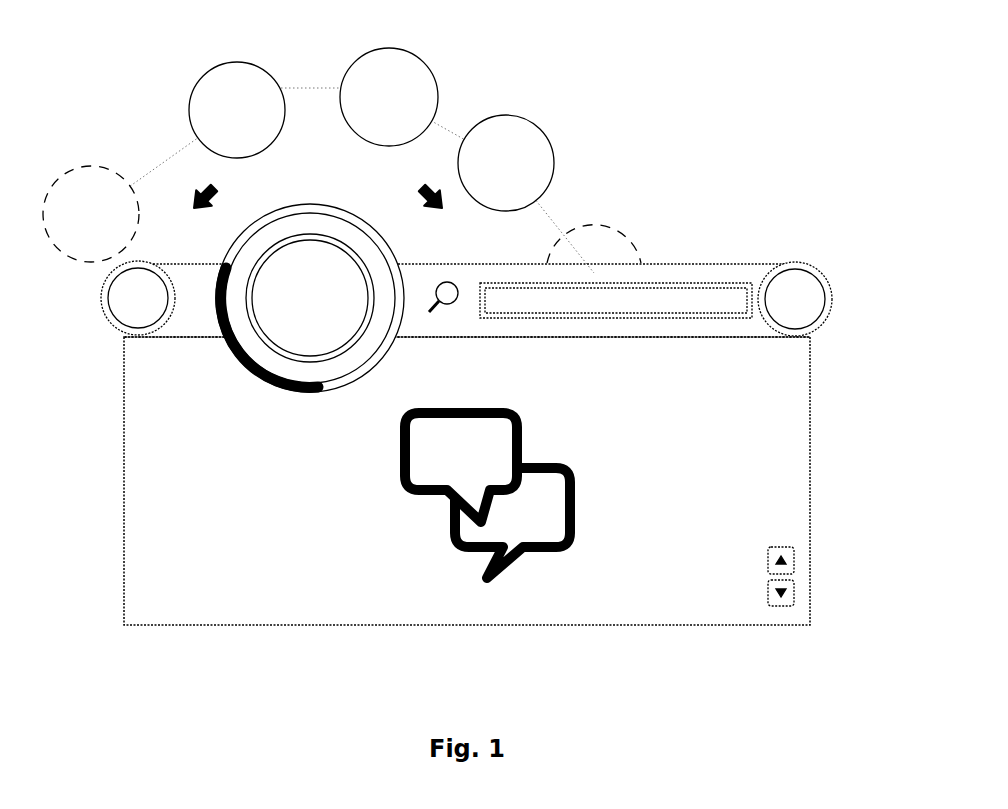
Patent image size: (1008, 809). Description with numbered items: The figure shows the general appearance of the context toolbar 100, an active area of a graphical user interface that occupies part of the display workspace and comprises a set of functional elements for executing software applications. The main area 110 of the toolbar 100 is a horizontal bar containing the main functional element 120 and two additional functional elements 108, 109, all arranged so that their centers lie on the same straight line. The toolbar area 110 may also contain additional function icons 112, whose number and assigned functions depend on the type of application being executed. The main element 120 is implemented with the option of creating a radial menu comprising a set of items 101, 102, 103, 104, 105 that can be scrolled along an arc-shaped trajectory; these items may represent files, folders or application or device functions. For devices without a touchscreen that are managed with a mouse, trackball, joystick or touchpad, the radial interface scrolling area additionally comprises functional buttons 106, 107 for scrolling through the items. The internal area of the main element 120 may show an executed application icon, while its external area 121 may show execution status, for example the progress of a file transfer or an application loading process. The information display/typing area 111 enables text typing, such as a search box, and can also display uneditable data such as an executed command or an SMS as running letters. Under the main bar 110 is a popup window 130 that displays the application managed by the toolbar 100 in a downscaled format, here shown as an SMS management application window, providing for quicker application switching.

The context toolbar 100 is at (797, 42).
The radial menu item 101 is at (93, 167).
The radial menu item 102 is at (223, 63).
The radial menu item 103 is at (398, 49).
The radial menu item 104 is at (527, 118).
The radial menu item 105 is at (636, 250).
The scrolling functional button 106 is at (202, 187).
The scrolling functional button 107 is at (427, 192).
The additional functional element 108 is at (108, 297).
The additional functional element 109 is at (795, 263).
The main area 110 is at (692, 263).
The information display/typing area 111 is at (637, 303).
The additional function icon 112 is at (450, 303).
The main functional element 120 is at (340, 260).
The external area 121 is at (252, 378).
The popup window 130 is at (783, 468).